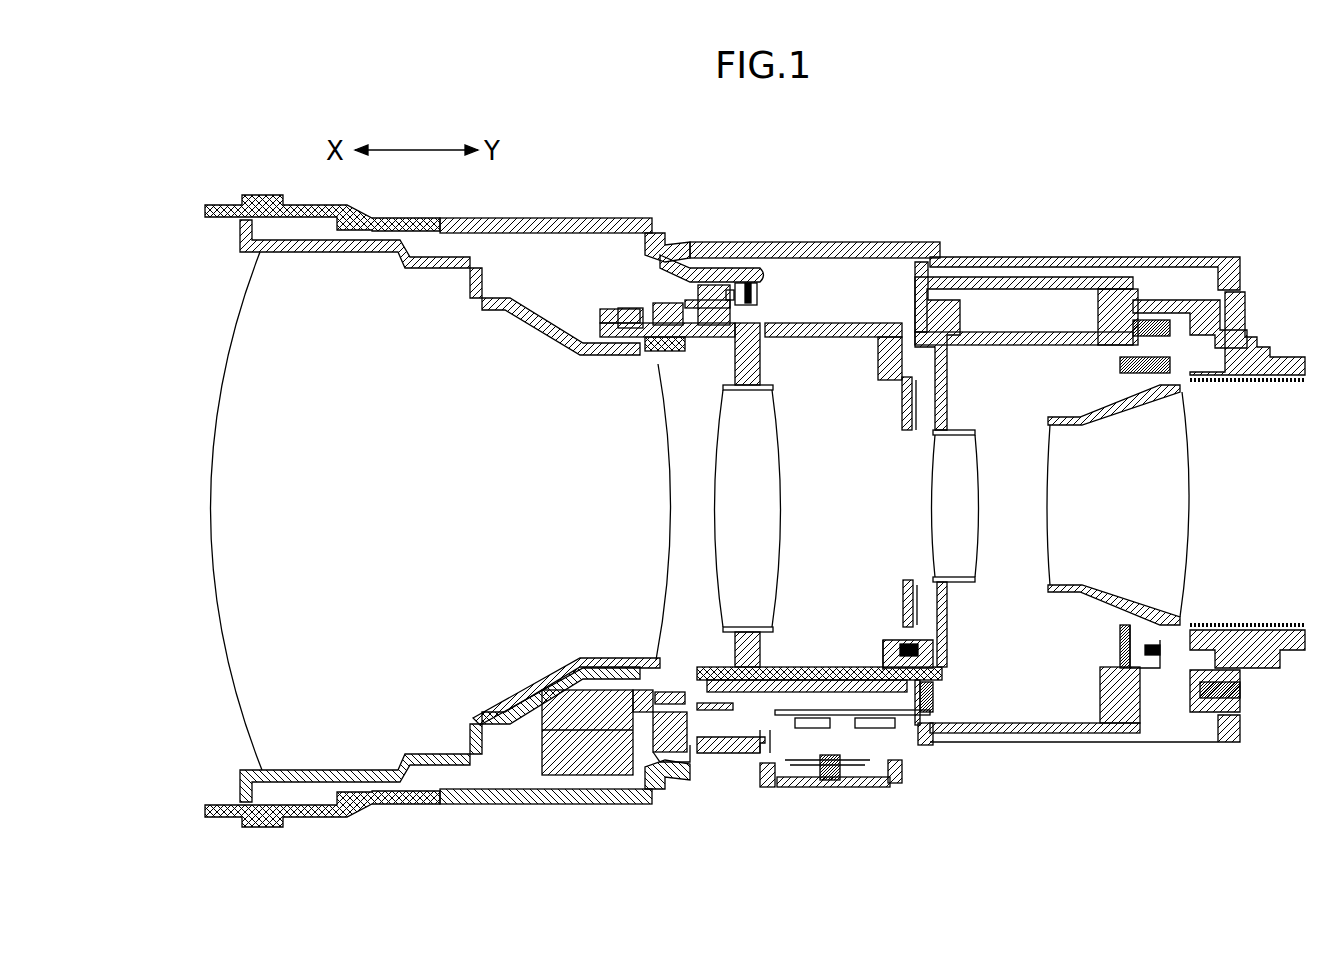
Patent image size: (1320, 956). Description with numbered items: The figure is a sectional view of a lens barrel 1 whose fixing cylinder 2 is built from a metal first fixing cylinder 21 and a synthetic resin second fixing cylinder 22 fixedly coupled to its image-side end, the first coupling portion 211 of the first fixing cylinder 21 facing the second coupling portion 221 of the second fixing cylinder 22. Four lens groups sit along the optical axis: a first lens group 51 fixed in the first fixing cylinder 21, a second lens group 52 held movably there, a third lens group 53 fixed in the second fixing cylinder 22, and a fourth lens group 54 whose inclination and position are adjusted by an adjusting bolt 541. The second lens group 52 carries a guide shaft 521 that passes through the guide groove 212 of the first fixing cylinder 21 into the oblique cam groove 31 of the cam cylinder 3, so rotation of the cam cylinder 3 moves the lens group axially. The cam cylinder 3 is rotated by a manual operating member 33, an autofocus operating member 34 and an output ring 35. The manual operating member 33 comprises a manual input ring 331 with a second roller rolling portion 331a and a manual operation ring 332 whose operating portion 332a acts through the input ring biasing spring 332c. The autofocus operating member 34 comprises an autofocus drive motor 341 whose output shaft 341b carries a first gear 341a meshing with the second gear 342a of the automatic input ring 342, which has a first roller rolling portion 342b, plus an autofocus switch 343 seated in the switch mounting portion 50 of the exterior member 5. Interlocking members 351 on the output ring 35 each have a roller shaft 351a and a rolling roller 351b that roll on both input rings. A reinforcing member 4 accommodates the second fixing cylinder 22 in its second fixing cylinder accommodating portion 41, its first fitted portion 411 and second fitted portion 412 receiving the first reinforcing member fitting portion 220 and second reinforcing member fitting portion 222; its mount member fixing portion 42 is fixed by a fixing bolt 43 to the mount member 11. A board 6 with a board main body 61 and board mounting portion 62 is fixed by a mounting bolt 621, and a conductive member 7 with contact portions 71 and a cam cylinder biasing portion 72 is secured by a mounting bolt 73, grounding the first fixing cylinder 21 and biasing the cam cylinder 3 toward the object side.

The lens barrel 1 is at (1200, 185).
The fixing cylinder 2 is at (945, 156).
The first fixing cylinder 21 is at (886, 323).
The second fixing cylinder 22 is at (940, 262).
The cam cylinder 3 is at (836, 258).
The cam groove 31 is at (757, 300).
The manual operating member 33 is at (718, 158).
The manual input ring 331 is at (733, 240).
The second roller rolling portion 331a is at (687, 270).
The manual operation ring 332 is at (625, 218).
The operating portion 332a is at (760, 268).
The input ring biasing spring 332c is at (745, 282).
The autofocus operating member 34 is at (775, 868).
The autofocus drive motor 341 is at (590, 777).
The first gear 341a is at (595, 725).
The output shaft 341b is at (605, 735).
The automatic input ring 342 is at (697, 762).
The second gear 342a is at (655, 692).
The first roller rolling portion 342b is at (650, 312).
The autofocus switch 343 is at (790, 787).
The output ring 35 is at (662, 380).
The interlocking member 351 is at (495, 380).
The roller shaft 351a is at (637, 373).
The rolling roller 351b is at (612, 368).
The reinforcing member 4 is at (1062, 275).
The second fixing cylinder accommodating portion 41 is at (1020, 277).
The first fitted portion 411 is at (1108, 277).
The second fitted portion 412 is at (985, 345).
The mount member fixing portion 42 is at (1192, 300).
The fixing bolt 43 is at (1245, 690).
The exterior member 5 is at (1178, 257).
The switch mounting portion 50 is at (890, 762).
The first lens group 51 is at (257, 690).
The second lens group 52 is at (765, 524).
The guide shaft 521 is at (735, 348).
The third lens group 53 is at (965, 524).
The fourth lens group 54 is at (1175, 551).
The adjusting bolt 541 is at (1170, 372).
The board 6 is at (923, 750).
The board main body 61 is at (840, 717).
The board mounting portion 62 is at (938, 717).
The mounting bolt 621 is at (940, 708).
The conductive member 7 is at (920, 663).
The contact portion 71 is at (893, 648).
The cam cylinder biasing portion 72 is at (940, 683).
The mounting bolt 73 is at (920, 633).
The mount member 11 is at (1245, 312).
The first coupling portion 211 is at (877, 350).
The guide groove 212 is at (805, 338).
The first reinforcing member fitting portion 220 is at (1127, 289).
The second coupling portion 221 is at (895, 368).
The second reinforcing member fitting portion 222 is at (925, 300).